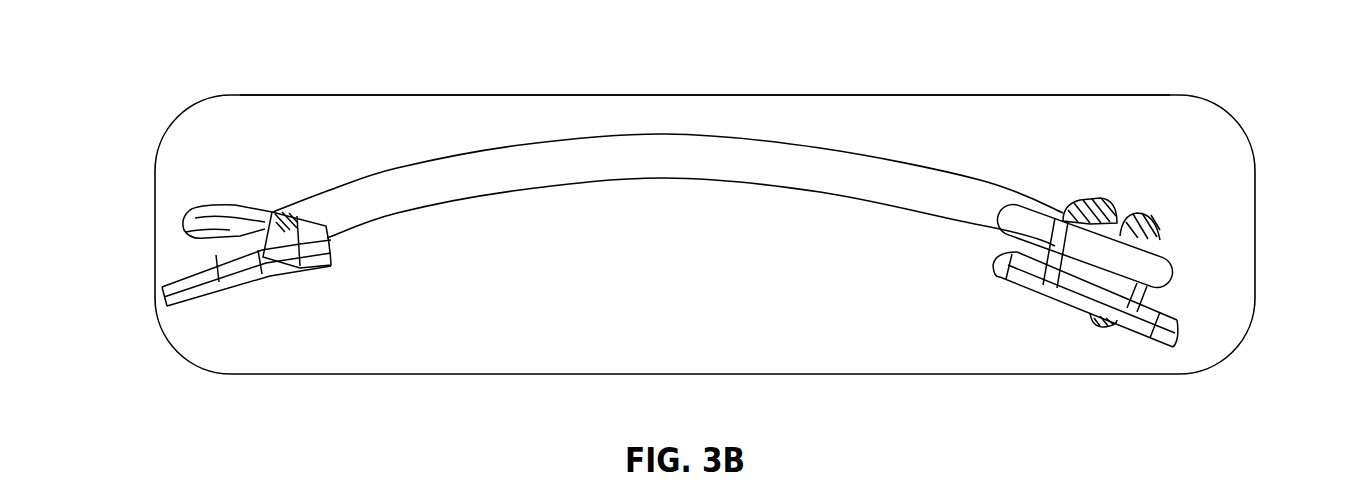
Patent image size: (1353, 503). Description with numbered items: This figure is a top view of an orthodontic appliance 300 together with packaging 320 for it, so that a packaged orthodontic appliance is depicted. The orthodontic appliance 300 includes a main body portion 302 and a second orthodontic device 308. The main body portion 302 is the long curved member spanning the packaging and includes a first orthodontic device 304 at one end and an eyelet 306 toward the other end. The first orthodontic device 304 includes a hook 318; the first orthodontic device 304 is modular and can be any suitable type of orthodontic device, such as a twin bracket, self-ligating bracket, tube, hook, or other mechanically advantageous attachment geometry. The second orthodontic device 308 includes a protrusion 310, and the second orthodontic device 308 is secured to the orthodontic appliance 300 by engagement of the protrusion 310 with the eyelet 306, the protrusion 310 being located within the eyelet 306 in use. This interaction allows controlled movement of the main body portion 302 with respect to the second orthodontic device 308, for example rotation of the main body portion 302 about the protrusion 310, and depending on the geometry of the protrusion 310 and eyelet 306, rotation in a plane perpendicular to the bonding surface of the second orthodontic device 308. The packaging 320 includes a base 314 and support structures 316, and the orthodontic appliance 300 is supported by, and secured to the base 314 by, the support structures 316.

The orthodontic appliance 300 is at (170, 250).
The main body portion 302 is at (312, 195).
The first orthodontic device 304 is at (303, 268).
The eyelet 306 is at (1167, 273).
The second orthodontic device 308 is at (1000, 277).
The protrusion 310 is at (1110, 203).
The base 314 is at (465, 95).
The support structures 316 is at (1138, 217).
The hook 318 is at (218, 208).
The packaging 320 is at (1215, 73).